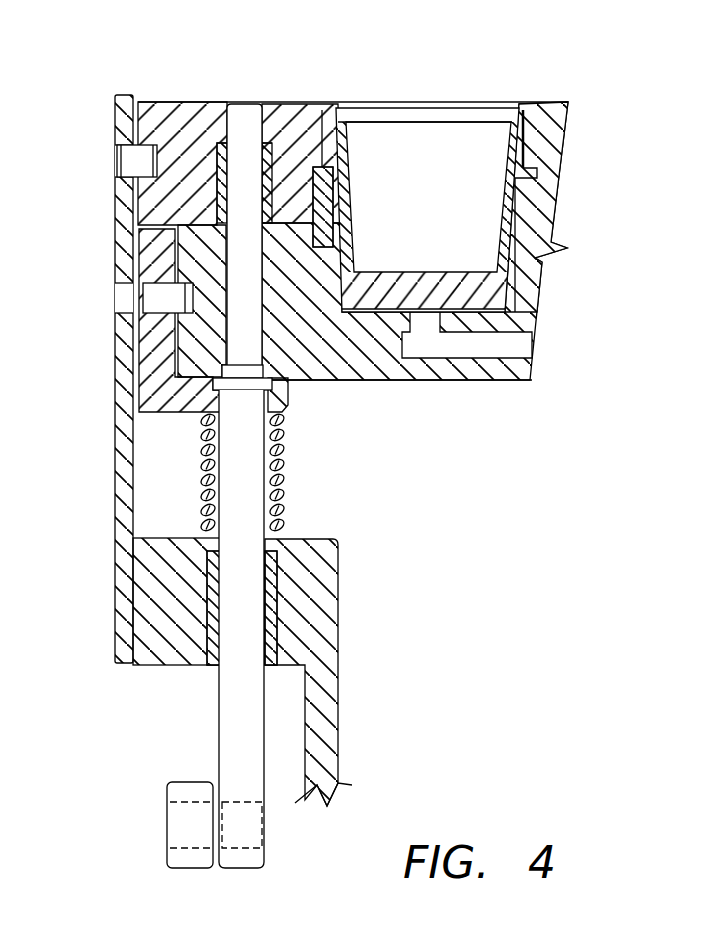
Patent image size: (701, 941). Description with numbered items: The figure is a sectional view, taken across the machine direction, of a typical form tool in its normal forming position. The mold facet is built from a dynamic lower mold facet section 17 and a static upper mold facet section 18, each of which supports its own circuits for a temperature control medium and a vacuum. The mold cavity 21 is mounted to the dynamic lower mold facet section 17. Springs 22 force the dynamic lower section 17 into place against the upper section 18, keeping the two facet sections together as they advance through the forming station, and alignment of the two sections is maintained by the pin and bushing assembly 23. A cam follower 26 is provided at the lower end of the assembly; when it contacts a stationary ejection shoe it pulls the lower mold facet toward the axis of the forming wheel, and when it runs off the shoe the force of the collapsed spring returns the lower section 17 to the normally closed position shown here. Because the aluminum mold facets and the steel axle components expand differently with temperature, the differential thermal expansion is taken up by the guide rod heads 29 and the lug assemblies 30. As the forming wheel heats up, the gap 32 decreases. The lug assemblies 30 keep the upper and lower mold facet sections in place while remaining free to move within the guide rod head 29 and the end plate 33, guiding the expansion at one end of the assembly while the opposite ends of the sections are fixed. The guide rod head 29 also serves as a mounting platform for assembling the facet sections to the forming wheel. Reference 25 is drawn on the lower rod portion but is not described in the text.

The dynamic lower mold facet section 17 is at (487, 381).
The static upper mold facet section 18 is at (188, 100).
The mold cavity 21 is at (485, 107).
The springs 22 is at (285, 476).
The pin and bushing assembly 23 is at (252, 103).
The lower rod portion 25 is at (218, 710).
The cam follower 26 is at (167, 803).
The guide rod head 29 is at (290, 398).
The lug assemblies 30 is at (128, 157).
The gap 32 is at (150, 244).
The end plate 33 is at (120, 94).